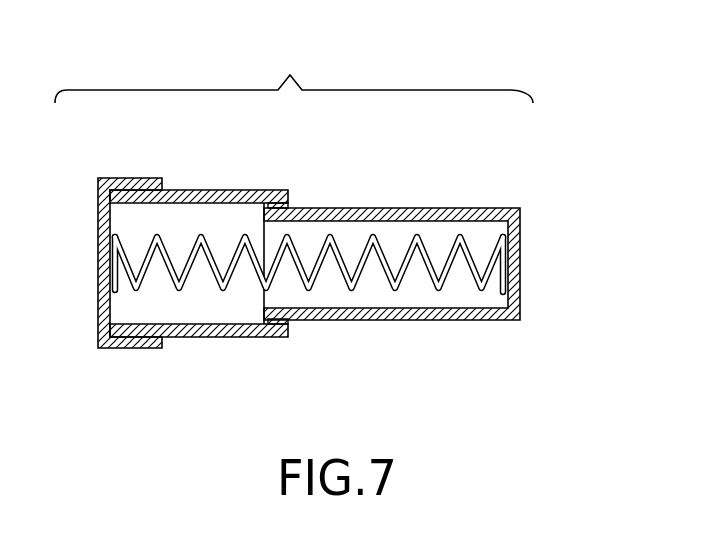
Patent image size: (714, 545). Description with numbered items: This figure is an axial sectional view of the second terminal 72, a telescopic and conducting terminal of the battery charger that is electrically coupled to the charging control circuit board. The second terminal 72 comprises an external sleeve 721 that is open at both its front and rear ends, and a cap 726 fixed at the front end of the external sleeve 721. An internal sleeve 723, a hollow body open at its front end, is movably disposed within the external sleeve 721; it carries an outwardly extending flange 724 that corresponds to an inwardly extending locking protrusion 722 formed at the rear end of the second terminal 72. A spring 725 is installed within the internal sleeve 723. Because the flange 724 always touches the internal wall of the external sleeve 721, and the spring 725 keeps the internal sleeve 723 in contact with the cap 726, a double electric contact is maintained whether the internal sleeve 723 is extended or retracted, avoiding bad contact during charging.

The second terminal 72 is at (294, 75).
The external sleeve 721 is at (232, 190).
The locking protrusion 722 is at (287, 204).
The internal sleeve 723 is at (470, 208).
The flange 724 is at (258, 216).
The spring 725 is at (192, 240).
The cap 726 is at (97, 231).